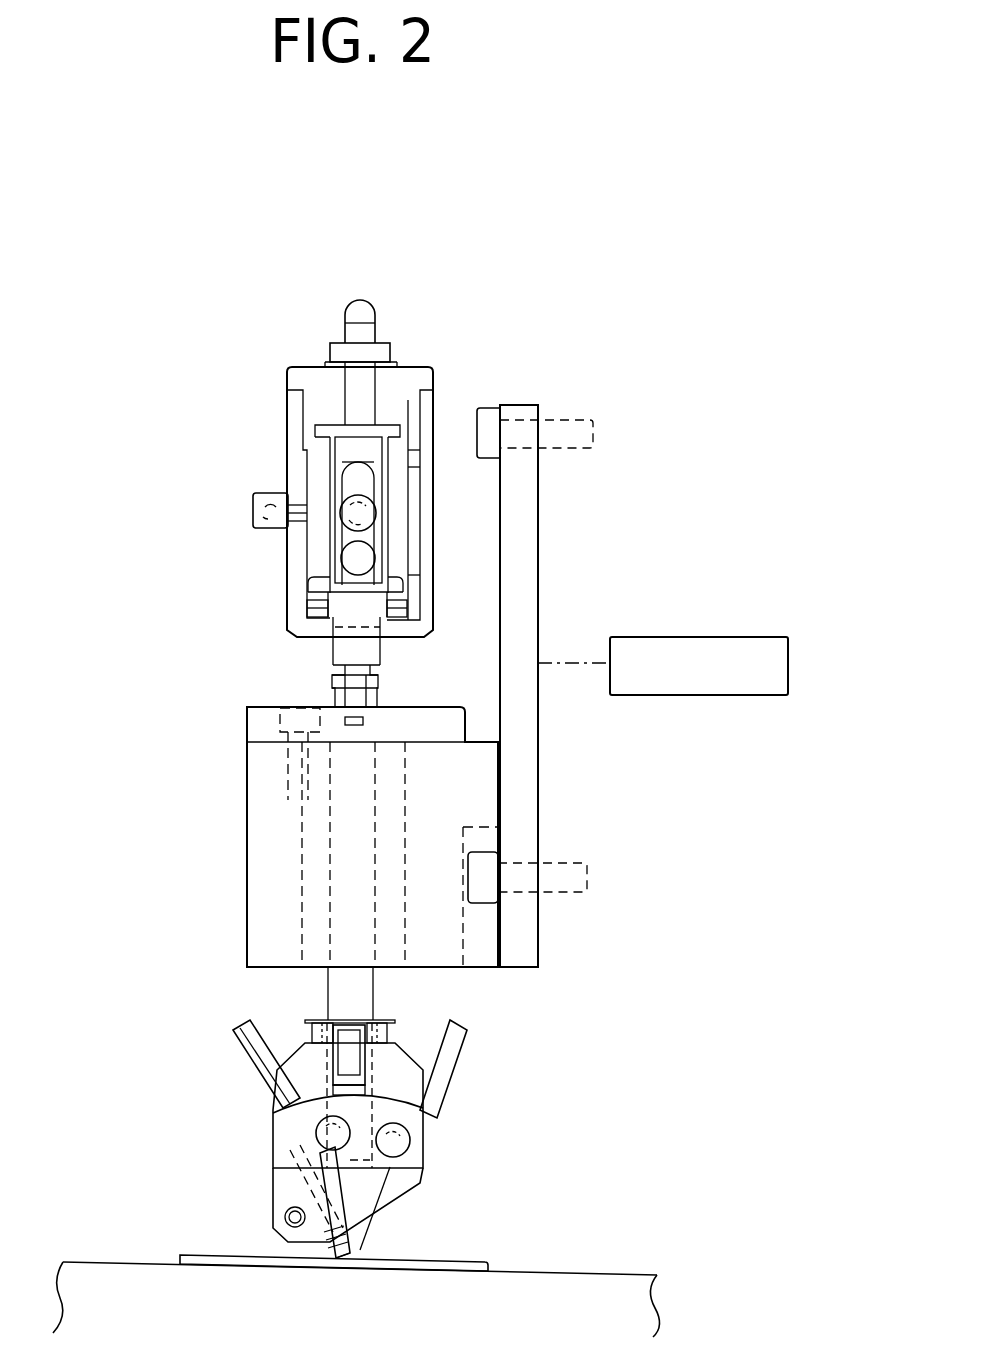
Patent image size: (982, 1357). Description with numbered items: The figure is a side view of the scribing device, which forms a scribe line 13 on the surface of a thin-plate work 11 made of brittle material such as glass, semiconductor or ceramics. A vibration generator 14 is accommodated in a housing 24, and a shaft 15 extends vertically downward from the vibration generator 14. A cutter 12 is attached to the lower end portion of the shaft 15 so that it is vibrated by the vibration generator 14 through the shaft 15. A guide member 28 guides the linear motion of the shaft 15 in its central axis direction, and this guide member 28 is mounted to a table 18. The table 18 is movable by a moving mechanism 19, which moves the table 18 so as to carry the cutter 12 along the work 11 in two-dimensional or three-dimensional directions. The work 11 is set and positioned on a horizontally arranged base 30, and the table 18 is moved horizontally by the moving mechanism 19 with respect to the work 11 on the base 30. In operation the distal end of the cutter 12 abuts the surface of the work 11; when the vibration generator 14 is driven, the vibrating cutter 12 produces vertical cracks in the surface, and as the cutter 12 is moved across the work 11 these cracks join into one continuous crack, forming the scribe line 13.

The work 11 is at (452, 1263).
The cutter 12 is at (322, 1255).
The scribe line 13 is at (357, 1257).
The vibration generator 14 is at (337, 538).
The shaft 15 is at (363, 1003).
The table 18 is at (530, 598).
The moving mechanism 19 is at (733, 637).
The housing 24 is at (287, 427).
The guide member 28 is at (318, 703).
The base 30 is at (637, 1280).